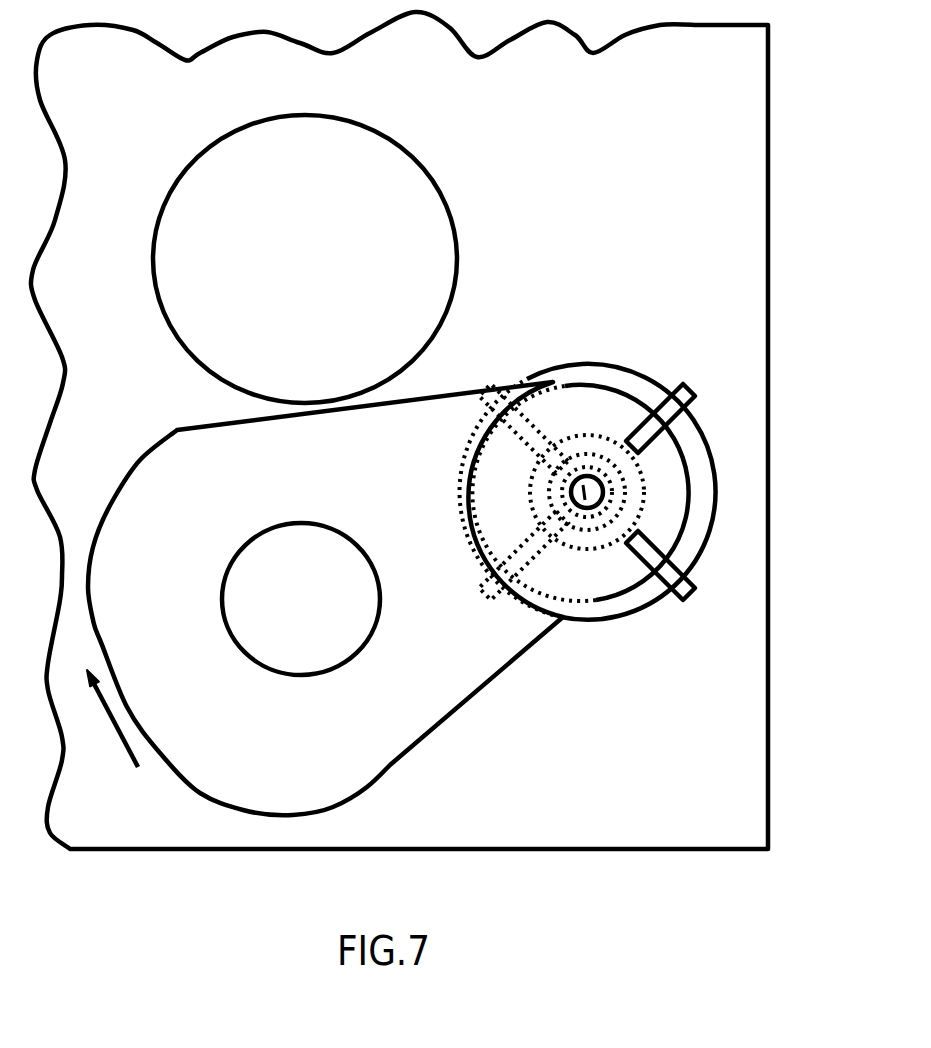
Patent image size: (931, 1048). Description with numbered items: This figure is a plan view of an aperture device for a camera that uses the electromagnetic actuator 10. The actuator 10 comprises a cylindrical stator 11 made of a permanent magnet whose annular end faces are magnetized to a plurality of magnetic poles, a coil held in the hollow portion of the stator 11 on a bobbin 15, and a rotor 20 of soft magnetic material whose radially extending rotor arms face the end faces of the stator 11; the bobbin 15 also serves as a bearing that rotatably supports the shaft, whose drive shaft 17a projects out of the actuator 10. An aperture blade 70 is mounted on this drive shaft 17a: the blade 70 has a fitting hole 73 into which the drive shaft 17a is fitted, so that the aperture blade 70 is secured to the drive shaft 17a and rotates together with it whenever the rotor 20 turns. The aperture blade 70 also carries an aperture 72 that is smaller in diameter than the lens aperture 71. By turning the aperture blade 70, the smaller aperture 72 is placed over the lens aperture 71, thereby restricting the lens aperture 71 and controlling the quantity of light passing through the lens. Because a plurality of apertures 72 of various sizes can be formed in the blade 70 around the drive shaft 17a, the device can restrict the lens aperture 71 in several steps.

The electromagnetic actuator 10 is at (644, 521).
The stator 11 is at (693, 440).
The bobbin 15 is at (673, 507).
The drive shaft 17a is at (583, 495).
The rotor 20 is at (682, 387).
The aperture blade 70 is at (460, 402).
The lens aperture 71 is at (425, 173).
The aperture 72 is at (258, 538).
The fitting hole 73 is at (578, 482).